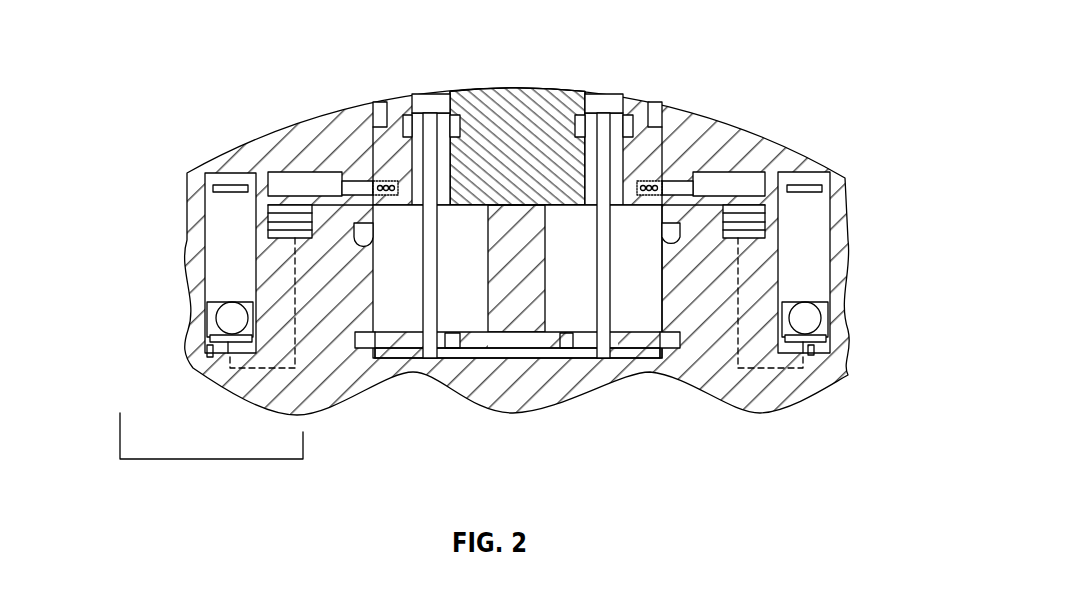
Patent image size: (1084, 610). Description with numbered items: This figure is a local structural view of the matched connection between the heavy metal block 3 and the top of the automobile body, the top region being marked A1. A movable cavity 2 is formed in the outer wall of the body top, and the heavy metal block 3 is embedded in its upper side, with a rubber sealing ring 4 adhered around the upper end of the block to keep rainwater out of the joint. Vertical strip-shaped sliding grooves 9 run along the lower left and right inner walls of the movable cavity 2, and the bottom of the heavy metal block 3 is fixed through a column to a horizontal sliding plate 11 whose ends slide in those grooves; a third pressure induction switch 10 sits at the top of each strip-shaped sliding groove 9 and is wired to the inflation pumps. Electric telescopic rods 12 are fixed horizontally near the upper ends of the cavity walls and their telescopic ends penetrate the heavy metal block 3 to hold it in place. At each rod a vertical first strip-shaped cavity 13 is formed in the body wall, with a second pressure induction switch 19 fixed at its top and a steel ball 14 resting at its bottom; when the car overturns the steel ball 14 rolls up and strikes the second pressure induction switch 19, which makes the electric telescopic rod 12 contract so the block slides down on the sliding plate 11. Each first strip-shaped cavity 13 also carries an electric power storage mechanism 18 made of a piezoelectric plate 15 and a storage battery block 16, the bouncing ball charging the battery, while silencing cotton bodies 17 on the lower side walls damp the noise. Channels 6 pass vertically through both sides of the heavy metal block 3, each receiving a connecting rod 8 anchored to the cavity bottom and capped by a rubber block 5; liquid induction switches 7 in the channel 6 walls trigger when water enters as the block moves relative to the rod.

The housing body A1 is at (850, 214).
The movable cavity 2 is at (410, 243).
The heavy metal block 3 is at (508, 163).
The rubber sealing ring 4 is at (661, 115).
The rubber block 5 is at (603, 103).
The channel 6 is at (623, 173).
The liquid induction switch 7 is at (629, 120).
The connecting rod 8 is at (612, 258).
The strip-shaped sliding groove 9 is at (668, 298).
The third pressure induction switch 10 is at (681, 240).
The sliding plate 11 is at (572, 338).
The electric telescopic rod 12 is at (293, 187).
The first strip-shaped cavity 13 is at (215, 283).
The steel ball 14 is at (229, 318).
The piezoelectric plate 15 is at (222, 351).
The storage battery block 16 is at (297, 239).
The silencing cotton body 17 is at (205, 350).
The electric power storage mechanism 18 is at (212, 460).
The second pressure induction switch 19 is at (208, 185).